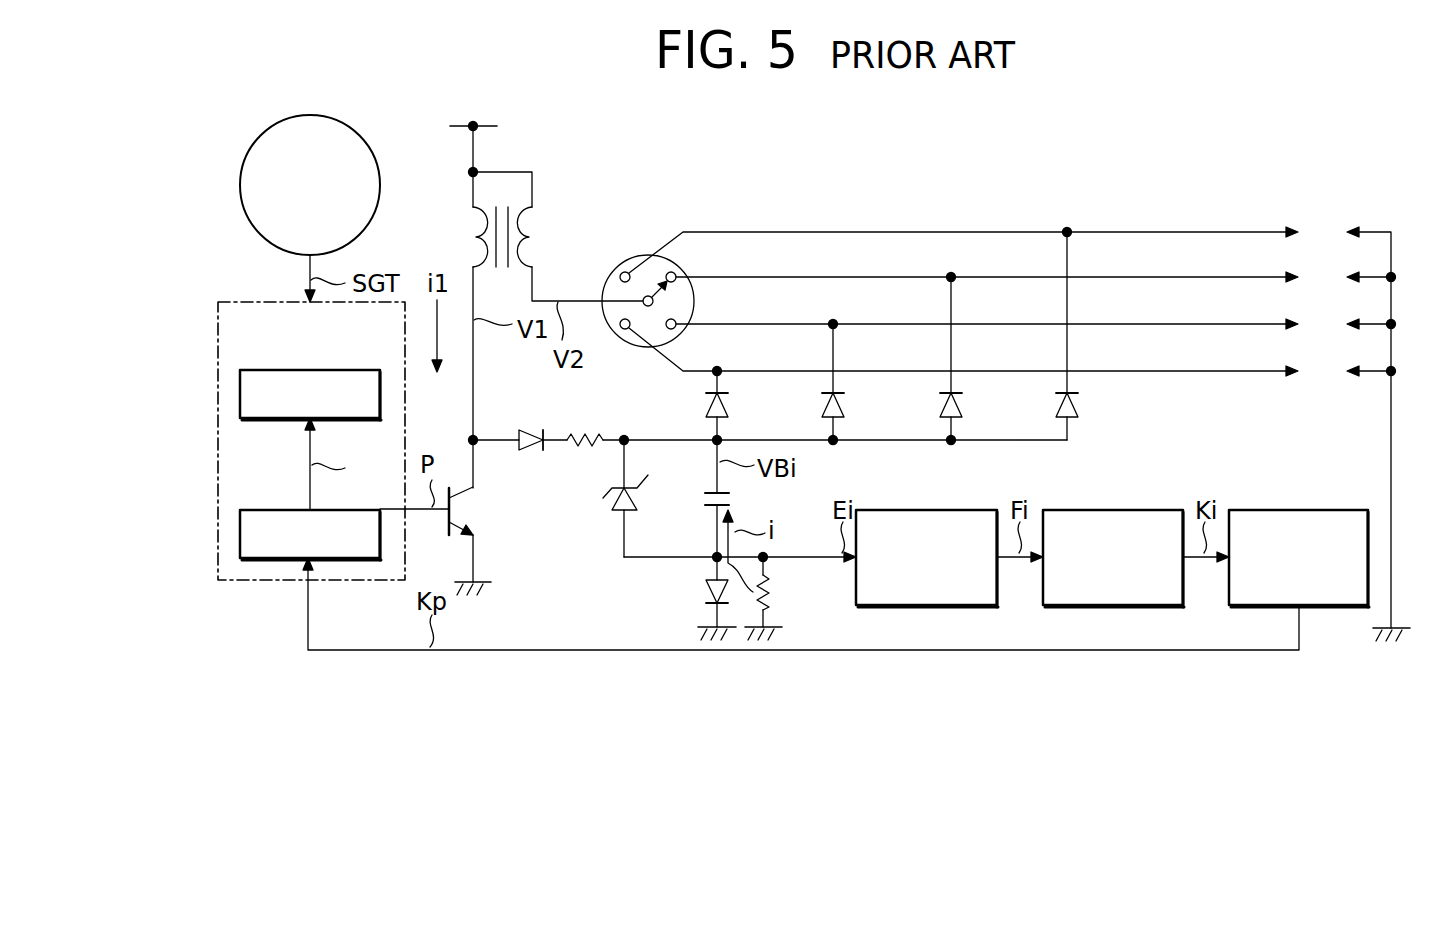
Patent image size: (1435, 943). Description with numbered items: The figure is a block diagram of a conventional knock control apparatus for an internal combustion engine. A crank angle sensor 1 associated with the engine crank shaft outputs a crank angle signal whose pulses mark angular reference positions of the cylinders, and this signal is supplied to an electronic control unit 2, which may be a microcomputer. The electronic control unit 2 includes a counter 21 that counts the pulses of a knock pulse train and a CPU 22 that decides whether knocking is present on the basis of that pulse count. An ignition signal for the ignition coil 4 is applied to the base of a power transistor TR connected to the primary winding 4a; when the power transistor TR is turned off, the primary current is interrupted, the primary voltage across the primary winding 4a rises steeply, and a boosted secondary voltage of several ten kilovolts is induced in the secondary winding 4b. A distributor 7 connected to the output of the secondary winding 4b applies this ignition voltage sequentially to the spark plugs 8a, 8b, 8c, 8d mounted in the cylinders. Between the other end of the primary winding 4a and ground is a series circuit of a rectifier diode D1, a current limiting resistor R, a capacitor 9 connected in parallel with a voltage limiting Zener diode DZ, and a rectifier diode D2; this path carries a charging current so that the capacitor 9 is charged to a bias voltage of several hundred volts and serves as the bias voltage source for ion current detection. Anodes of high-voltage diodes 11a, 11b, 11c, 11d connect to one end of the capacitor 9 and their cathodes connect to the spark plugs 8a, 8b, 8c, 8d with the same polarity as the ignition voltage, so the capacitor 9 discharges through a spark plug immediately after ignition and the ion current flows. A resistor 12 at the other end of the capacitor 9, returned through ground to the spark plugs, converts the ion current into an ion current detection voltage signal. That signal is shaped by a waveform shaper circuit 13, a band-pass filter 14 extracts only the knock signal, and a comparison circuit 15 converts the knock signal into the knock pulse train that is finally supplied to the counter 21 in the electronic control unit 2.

The crank angle sensor 1 is at (240, 185).
The electronic control unit 2 is at (218, 322).
The counter 21 is at (240, 533).
The CPU 22 is at (240, 392).
The ignition coil 4 is at (504, 202).
The primary winding 4a is at (468, 230).
The secondary winding 4b is at (540, 230).
The distributor 7 is at (638, 256).
The spark plug 8a is at (1325, 371).
The spark plug 8b is at (1325, 324).
The spark plug 8c is at (1325, 277).
The spark plug 8d is at (1325, 232).
The capacitor 9 is at (734, 497).
The high-voltage diode 11a is at (704, 402).
The high-voltage diode 11b is at (820, 402).
The high-voltage diode 11c is at (938, 402).
The high-voltage diode 11d is at (1054, 402).
The resistor 12 is at (772, 593).
The waveform shaper circuit 13 is at (955, 510).
The band-pass filter 14 is at (1140, 510).
The comparison circuit 15 is at (1315, 510).
The power transistor TR is at (468, 509).
The rectifier diode D1 is at (534, 430).
The current limiting resistor R is at (585, 432).
The voltage limiting Zener diode DZ is at (608, 497).
The rectifier diode D2 is at (703, 594).